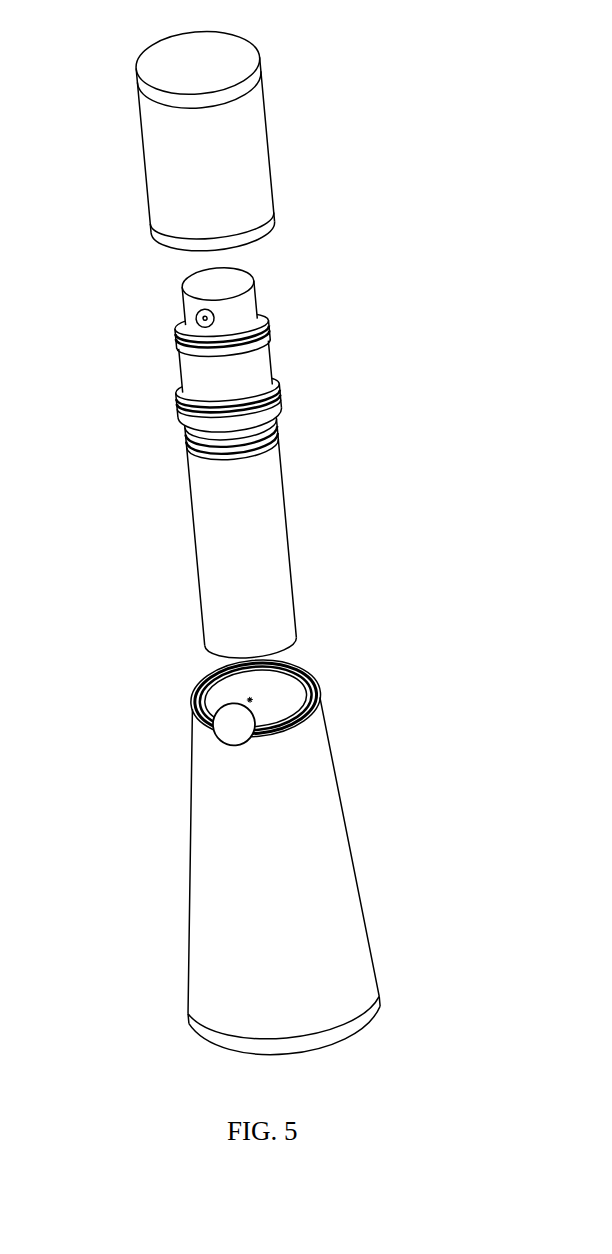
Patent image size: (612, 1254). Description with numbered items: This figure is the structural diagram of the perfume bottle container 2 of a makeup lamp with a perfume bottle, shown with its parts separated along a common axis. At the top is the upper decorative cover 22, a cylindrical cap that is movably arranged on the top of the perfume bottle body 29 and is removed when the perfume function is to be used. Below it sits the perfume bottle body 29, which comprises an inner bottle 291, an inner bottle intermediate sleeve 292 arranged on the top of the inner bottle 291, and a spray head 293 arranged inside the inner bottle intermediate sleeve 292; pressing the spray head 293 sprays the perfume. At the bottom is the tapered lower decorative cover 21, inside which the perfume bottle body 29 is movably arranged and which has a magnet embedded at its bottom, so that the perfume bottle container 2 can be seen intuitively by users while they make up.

The perfume bottle container 2 is at (290, 857).
The lower decorative cover 21 is at (326, 694).
The upper decorative cover 22 is at (150, 245).
The perfume bottle body 29 is at (223, 462).
The inner bottle 291 is at (241, 539).
The inner bottle intermediate sleeve 292 is at (232, 441).
The spray head 293 is at (220, 301).